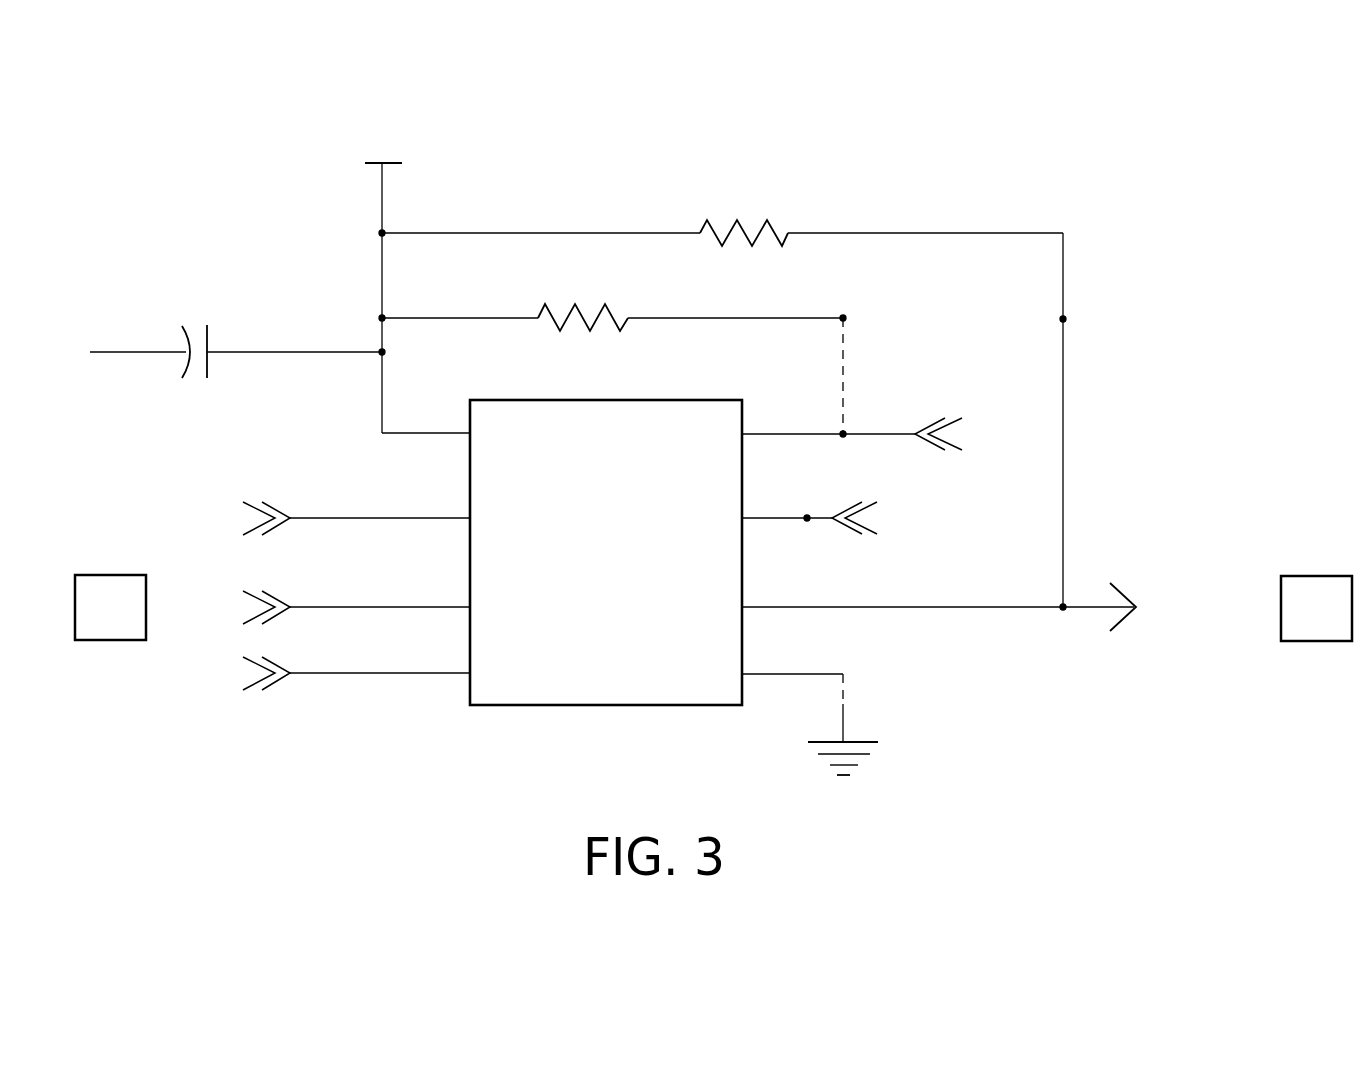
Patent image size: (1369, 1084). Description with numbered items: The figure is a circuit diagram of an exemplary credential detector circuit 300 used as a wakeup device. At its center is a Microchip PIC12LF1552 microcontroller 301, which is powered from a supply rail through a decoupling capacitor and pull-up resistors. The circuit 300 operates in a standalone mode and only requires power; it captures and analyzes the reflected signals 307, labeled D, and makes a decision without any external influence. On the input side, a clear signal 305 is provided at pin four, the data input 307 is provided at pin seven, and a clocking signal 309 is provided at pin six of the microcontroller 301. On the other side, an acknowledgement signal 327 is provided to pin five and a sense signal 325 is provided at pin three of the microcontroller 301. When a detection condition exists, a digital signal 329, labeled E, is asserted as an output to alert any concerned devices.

The credential detector circuit 300 is at (85, 250).
The microcontroller 301 is at (482, 706).
The clear signal 305 is at (333, 517).
The data input 307 is at (353, 606).
The clocking signal 309 is at (353, 674).
The sense signal 325 is at (955, 520).
The acknowledgement signal 327 is at (1007, 425).
The digital signal 329 is at (1228, 601).